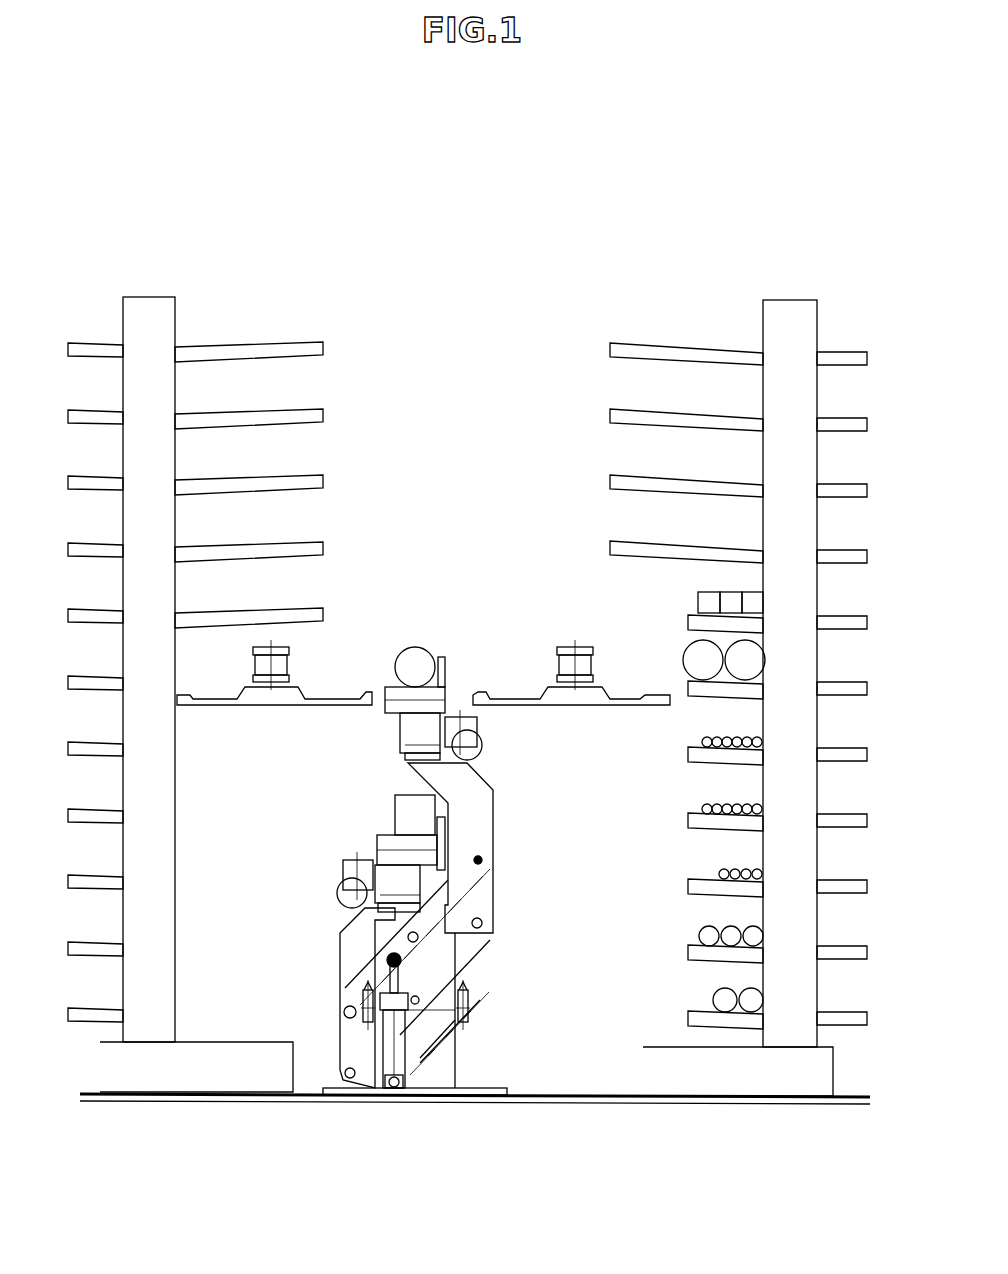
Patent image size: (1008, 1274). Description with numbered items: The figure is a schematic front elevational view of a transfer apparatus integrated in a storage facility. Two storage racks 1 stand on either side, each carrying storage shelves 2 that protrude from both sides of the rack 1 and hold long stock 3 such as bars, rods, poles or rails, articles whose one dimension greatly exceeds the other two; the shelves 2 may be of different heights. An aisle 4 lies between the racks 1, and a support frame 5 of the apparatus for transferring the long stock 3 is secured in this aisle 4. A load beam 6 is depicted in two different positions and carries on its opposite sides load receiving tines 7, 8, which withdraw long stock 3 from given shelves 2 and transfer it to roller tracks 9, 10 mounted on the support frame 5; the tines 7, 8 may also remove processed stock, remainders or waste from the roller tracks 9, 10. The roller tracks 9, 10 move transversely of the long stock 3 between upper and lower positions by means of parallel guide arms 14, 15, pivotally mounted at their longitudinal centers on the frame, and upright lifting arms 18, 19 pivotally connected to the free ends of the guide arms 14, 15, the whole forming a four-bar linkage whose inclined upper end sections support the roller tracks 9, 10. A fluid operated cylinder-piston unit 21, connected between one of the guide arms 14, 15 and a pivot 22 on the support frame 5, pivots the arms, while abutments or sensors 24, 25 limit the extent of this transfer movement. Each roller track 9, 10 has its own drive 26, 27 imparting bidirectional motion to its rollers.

The storage rack 1 is at (152, 313).
The storage shelf 2 is at (272, 353).
The long stock 3 is at (418, 647).
The aisle 4 is at (465, 378).
The support frame 5 is at (457, 1055).
The load beam 6 is at (285, 662).
The tine 7 is at (210, 692).
The tine 8 is at (638, 705).
The roller track 9 is at (455, 680).
The roller track 10 is at (370, 835).
The guide arm 14 is at (483, 880).
The guide arm 15 is at (480, 955).
The lifting arm 18 is at (480, 820).
The lifting arm 19 is at (350, 960).
The cylinder-piston unit 21 is at (368, 1087).
The pivot 22 is at (395, 1090).
The abutment or sensor 24 is at (362, 1005).
The abutment or sensor 25 is at (475, 1005).
The drive 26 is at (477, 750).
The drive 27 is at (345, 893).